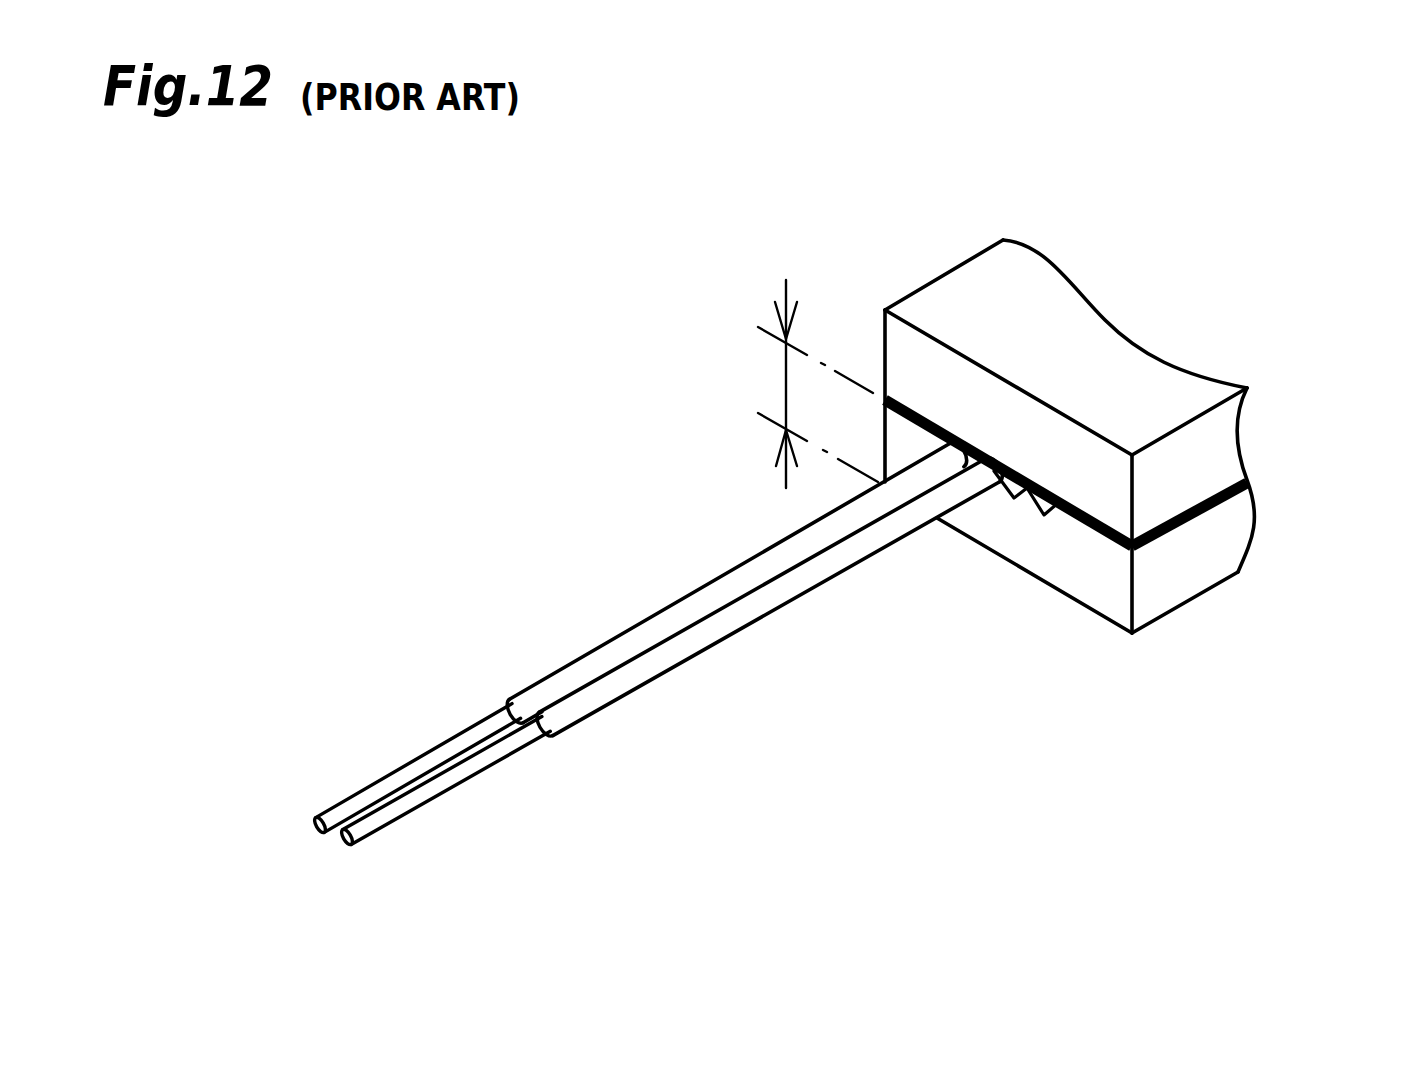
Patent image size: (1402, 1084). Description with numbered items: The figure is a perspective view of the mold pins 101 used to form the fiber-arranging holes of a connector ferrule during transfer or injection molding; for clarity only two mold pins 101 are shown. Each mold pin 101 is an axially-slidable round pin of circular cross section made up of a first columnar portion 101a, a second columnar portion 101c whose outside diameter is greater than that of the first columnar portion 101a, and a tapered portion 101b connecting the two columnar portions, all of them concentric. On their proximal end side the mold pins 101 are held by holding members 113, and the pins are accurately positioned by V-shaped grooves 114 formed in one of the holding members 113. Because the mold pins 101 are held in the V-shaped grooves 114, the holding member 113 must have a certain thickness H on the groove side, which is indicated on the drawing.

The mold pin 101 is at (657, 670).
The first columnar portion 101a is at (425, 796).
The tapered portion 101b is at (547, 737).
The second columnar portion 101c is at (756, 598).
The holding member 113 is at (1222, 445).
The V-shaped groove 114 is at (1053, 515).
The thickness H is at (786, 383).